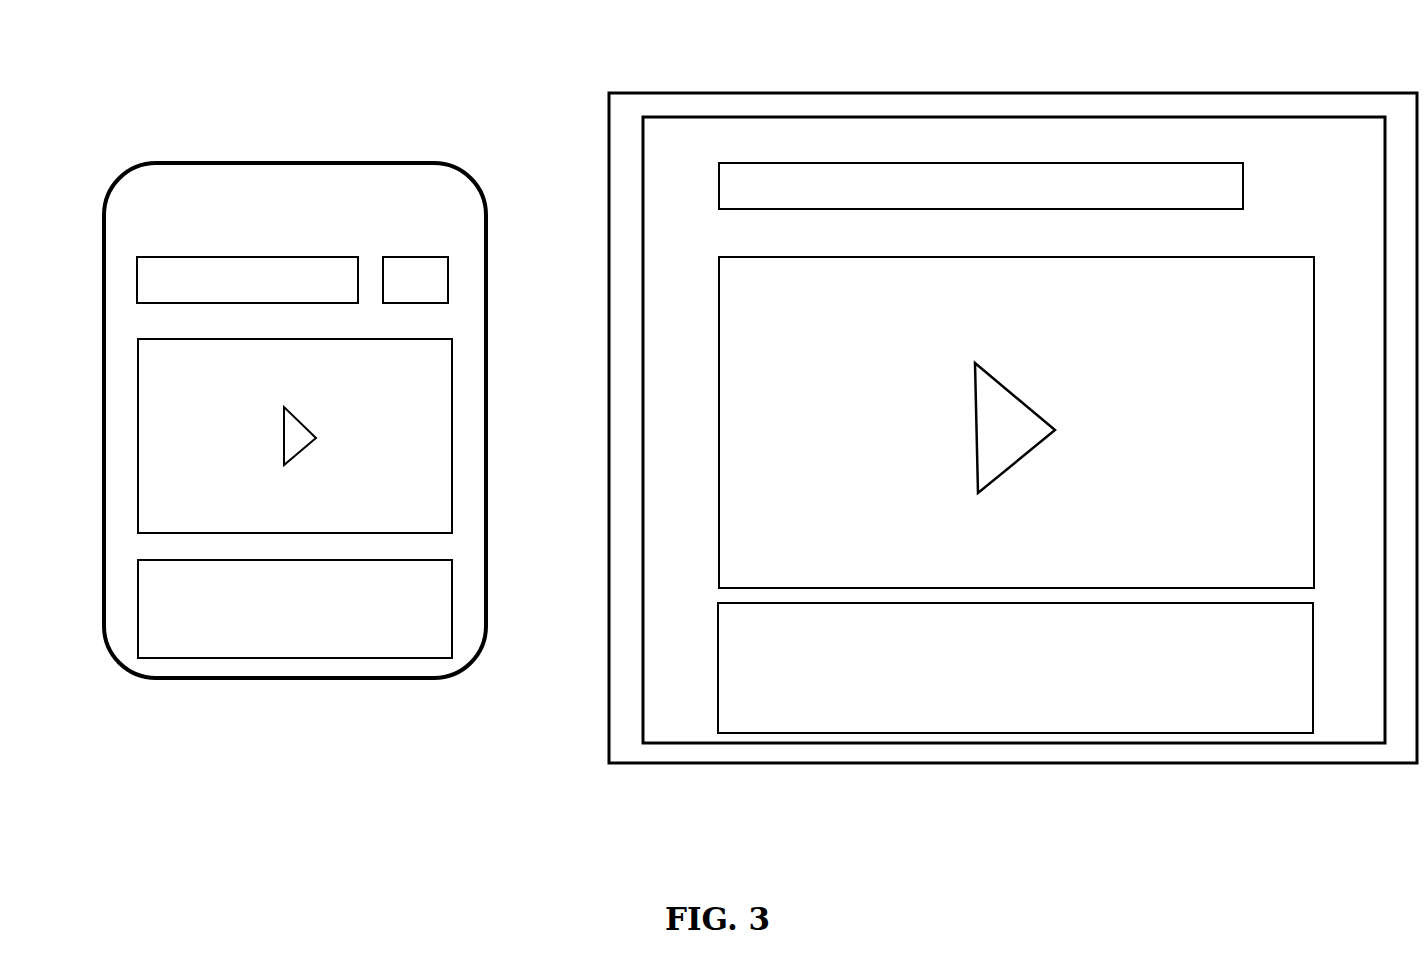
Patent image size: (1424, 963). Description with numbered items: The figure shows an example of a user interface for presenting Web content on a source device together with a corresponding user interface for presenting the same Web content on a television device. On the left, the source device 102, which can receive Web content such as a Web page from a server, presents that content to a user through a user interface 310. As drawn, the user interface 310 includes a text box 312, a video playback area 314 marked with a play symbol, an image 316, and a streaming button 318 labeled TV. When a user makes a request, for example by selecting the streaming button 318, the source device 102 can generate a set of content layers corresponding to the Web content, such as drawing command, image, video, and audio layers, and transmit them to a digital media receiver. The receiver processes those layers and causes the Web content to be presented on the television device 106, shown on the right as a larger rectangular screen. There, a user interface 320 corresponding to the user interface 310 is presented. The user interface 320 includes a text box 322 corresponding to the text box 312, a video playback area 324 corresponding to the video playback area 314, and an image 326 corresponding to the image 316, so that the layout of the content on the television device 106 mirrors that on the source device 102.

The source device 102 is at (355, 148).
The user interface 310 is at (424, 188).
The text box 312 is at (196, 243).
The video playback area 314 is at (128, 380).
The image 316 is at (128, 608).
The streaming button 318 is at (462, 281).
The television device 106 is at (1150, 78).
The user interface 320 is at (1305, 135).
The text box 322 is at (709, 185).
The video playback area 324 is at (1290, 243).
The image 326 is at (1322, 695).